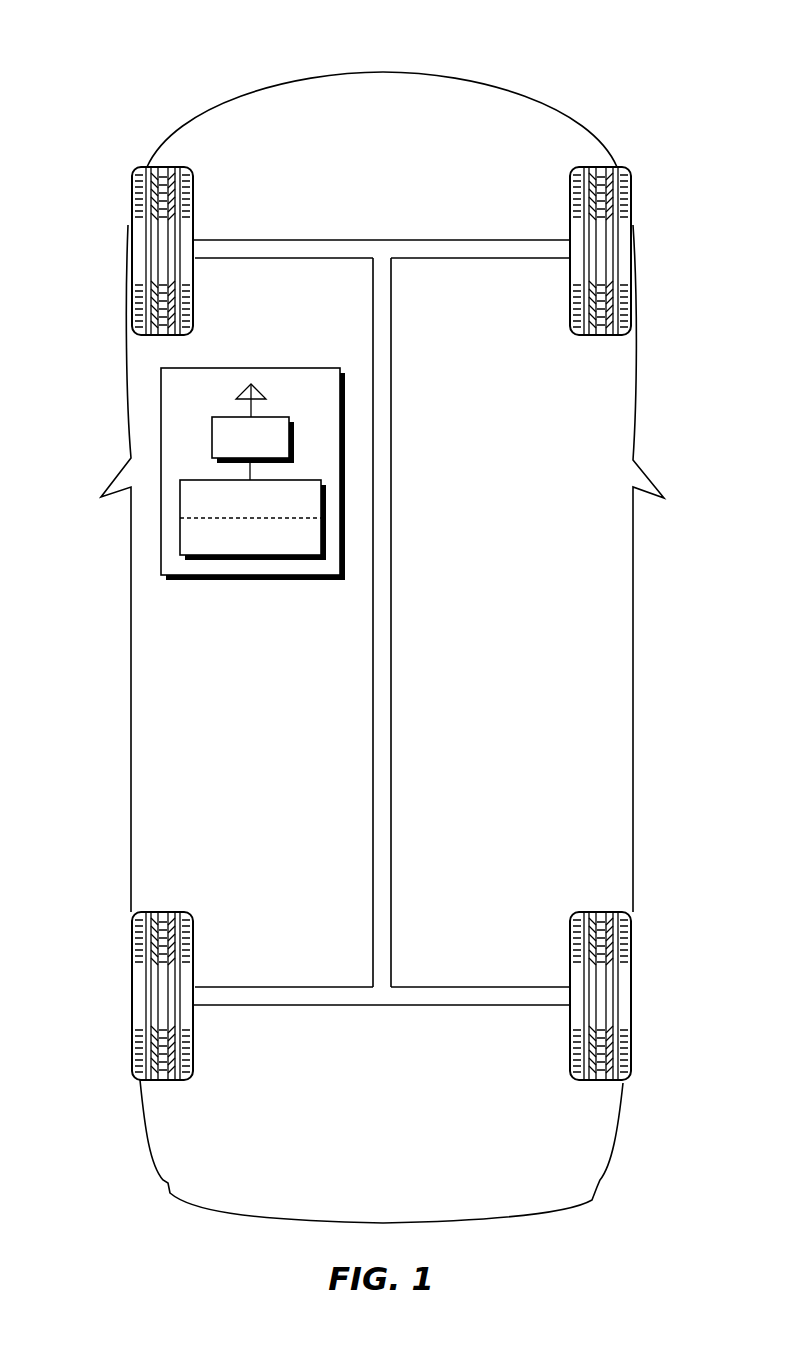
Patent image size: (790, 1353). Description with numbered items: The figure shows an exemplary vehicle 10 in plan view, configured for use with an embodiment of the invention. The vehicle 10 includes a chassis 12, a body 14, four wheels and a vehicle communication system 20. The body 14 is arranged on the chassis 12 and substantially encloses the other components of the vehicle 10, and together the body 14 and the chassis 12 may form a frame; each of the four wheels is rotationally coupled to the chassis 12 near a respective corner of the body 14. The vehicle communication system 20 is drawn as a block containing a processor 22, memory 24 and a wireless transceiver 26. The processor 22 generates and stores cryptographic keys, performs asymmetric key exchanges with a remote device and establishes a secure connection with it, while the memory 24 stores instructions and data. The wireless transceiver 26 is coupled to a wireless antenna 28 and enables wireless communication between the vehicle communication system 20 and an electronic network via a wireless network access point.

The vehicle 10 is at (616, 45).
The chassis 12 is at (391, 466).
The body 14 is at (633, 582).
The vehicle communication system 20 is at (302, 368).
The processor 22 is at (178, 497).
The memory 24 is at (177, 540).
The wireless transceiver 26 is at (212, 438).
The wireless antenna 28 is at (238, 398).